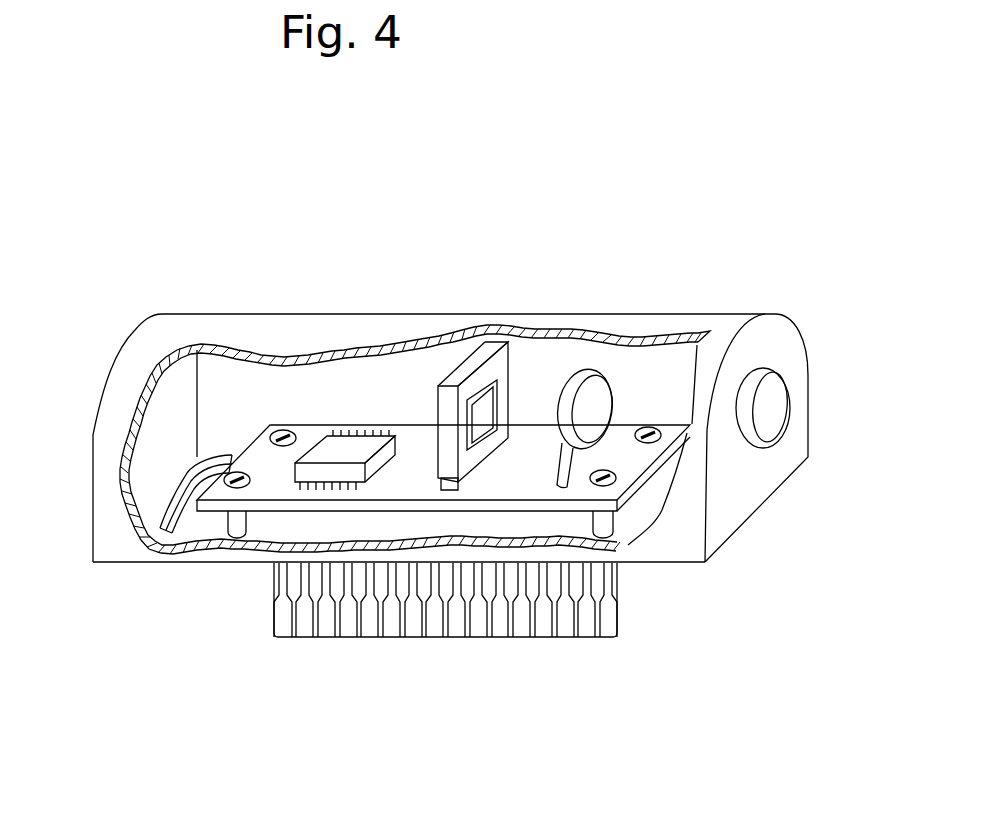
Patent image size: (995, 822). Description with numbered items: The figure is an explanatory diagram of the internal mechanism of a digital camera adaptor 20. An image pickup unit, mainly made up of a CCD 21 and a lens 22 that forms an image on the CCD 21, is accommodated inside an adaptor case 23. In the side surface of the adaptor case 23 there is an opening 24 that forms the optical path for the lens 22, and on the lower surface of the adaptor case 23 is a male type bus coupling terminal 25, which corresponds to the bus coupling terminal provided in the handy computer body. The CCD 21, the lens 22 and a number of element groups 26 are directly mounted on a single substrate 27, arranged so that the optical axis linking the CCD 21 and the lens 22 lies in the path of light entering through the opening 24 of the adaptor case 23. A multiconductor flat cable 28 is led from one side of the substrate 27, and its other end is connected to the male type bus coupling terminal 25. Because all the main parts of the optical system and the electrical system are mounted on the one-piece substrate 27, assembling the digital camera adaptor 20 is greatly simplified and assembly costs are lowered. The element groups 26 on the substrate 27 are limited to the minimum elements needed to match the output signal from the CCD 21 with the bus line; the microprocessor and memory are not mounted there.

The digital camera adaptor 20 is at (273, 340).
The CCD 21 is at (508, 370).
The lens 22 is at (608, 426).
The adaptor case 23 is at (637, 324).
The opening 24 is at (772, 393).
The male type bus coupling terminal 25 is at (545, 628).
The element groups 26 is at (352, 450).
The substrate 27 is at (328, 490).
The multiconductor flat cable 28 is at (167, 498).